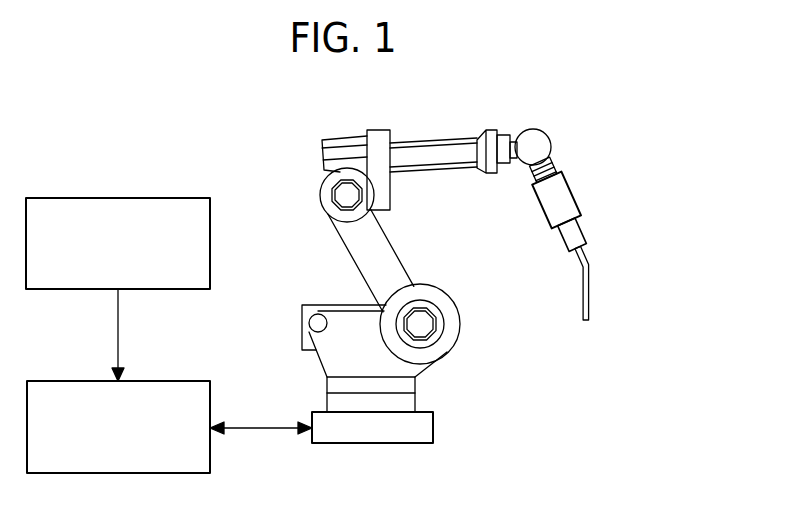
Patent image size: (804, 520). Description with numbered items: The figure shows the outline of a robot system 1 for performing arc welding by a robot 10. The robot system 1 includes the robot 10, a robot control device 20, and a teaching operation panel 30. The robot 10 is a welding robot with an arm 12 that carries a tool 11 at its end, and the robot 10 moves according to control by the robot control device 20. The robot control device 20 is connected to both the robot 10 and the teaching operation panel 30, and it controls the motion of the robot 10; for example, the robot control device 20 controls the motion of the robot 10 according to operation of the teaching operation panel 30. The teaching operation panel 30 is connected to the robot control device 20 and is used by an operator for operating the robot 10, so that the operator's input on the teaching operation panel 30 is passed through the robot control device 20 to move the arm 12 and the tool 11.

The robot system 1 is at (492, 247).
The robot 10 is at (315, 305).
The tool 11 is at (587, 265).
The arm 12 is at (556, 163).
The robot control device 20 is at (163, 381).
The teaching operation panel 30 is at (163, 198).